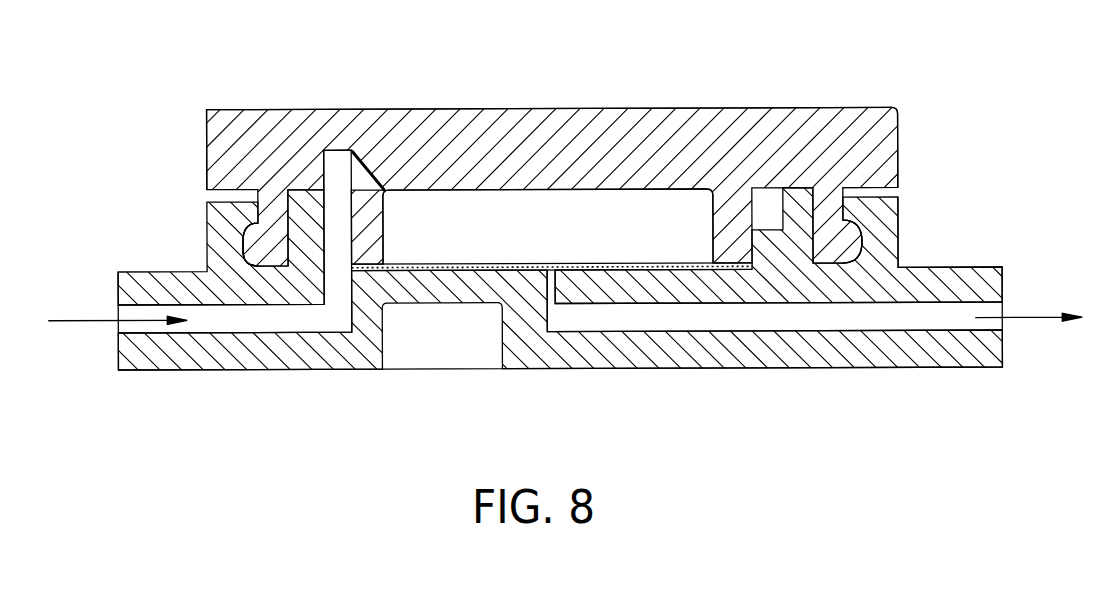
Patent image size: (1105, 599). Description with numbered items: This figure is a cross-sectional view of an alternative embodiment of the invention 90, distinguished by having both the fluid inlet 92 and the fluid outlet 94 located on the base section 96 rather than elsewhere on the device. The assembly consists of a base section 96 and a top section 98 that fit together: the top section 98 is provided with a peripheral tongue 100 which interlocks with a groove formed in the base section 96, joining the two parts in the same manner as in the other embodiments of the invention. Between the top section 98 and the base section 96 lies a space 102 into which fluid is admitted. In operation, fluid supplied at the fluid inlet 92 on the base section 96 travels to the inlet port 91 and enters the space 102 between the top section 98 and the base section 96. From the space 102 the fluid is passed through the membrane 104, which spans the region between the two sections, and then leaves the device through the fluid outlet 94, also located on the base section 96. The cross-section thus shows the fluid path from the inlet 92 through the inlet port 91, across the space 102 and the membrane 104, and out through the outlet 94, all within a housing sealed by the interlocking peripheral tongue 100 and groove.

The embodiment of the invention 90 is at (940, 85).
The inlet port 91 is at (374, 166).
The fluid inlet 92 is at (251, 325).
The fluid outlet 94 is at (797, 314).
The base section 96 is at (631, 368).
The top section 98 is at (707, 108).
The peripheral tongue 100 is at (253, 240).
The space 102 is at (665, 236).
The membrane 104 is at (484, 263).